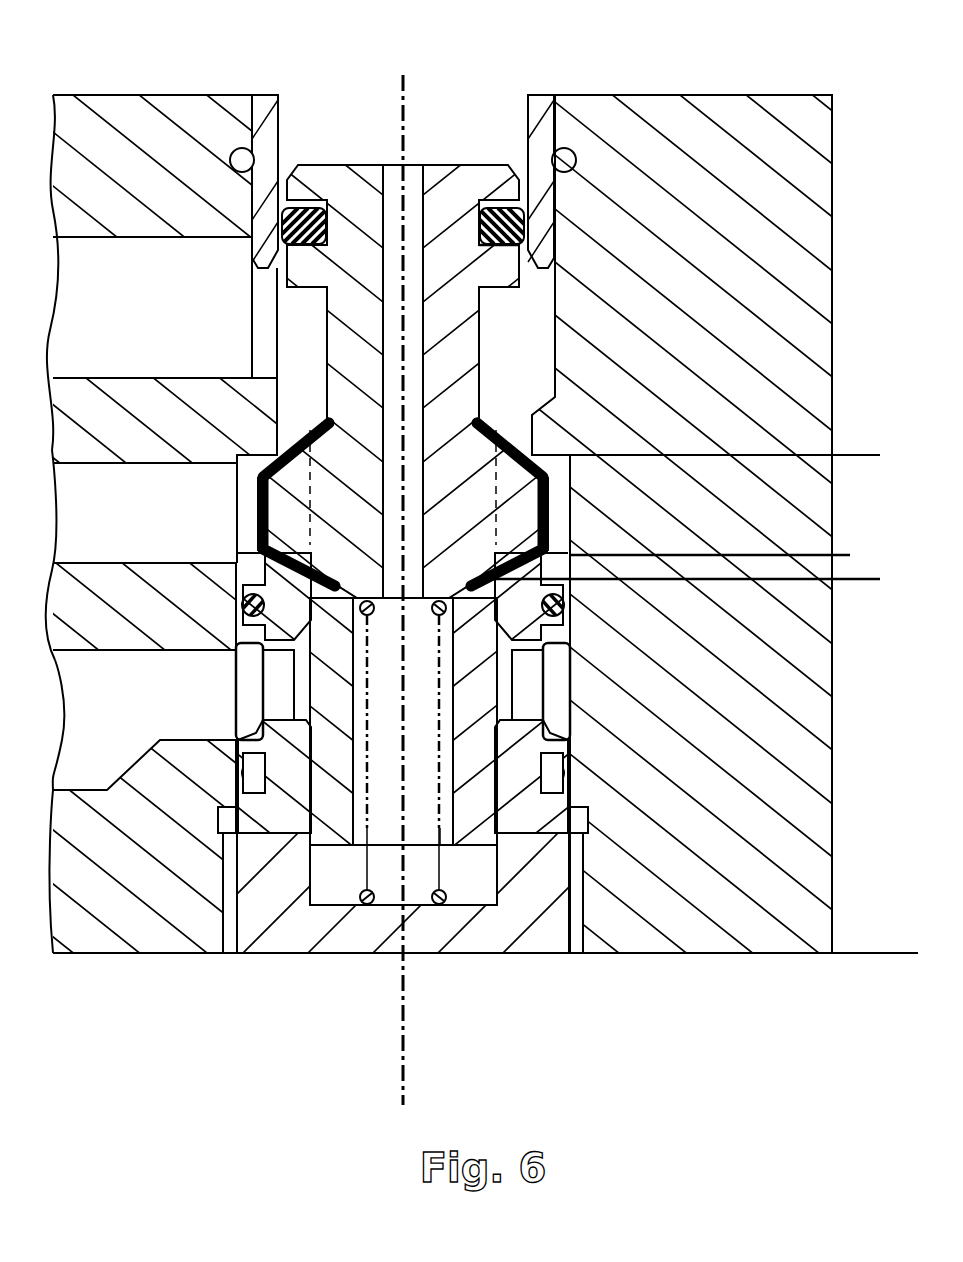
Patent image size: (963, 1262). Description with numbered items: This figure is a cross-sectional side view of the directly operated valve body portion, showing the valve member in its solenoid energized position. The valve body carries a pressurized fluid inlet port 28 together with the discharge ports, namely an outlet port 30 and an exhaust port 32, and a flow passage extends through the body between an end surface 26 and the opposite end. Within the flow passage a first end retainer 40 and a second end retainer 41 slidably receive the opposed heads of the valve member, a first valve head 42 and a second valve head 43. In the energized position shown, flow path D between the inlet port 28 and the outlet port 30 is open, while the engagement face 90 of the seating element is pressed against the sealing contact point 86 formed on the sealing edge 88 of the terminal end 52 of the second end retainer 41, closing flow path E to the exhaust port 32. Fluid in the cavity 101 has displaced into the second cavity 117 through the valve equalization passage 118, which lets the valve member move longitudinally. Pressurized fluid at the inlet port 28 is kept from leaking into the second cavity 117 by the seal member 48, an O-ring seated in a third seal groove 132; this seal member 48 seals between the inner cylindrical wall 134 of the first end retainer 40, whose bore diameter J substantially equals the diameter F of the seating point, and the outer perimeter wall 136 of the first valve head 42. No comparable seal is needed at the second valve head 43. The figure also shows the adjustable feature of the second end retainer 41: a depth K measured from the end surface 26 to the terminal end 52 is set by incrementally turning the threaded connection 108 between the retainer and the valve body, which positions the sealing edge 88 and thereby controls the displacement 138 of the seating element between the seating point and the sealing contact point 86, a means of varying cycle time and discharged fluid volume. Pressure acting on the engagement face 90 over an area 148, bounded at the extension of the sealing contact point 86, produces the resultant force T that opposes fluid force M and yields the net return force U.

The end surface 26 is at (136, 960).
The inlet port 28 is at (100, 292).
The outlet port 30 is at (100, 504).
The exhaust port 32 is at (100, 697).
The first end retainer 40 is at (263, 94).
The second end retainer 41 is at (452, 930).
The first valve head 42 is at (307, 275).
The second valve head 43 is at (330, 817).
The seal member 48 is at (528, 218).
The terminal end 52 is at (255, 577).
The sealing contact point 86 is at (562, 600).
The sealing edge 88 is at (300, 575).
The engagement face 90 is at (322, 565).
The cavity 101 is at (420, 800).
The threaded connection 108 is at (577, 915).
The second cavity 117 is at (510, 134).
The valve equalization passage 118 is at (413, 412).
The third seal groove 132 is at (515, 243).
The inner cylindrical wall 134 is at (537, 125).
The outer perimeter wall 136 is at (274, 277).
The displacement 138 is at (865, 457).
The area 148 is at (314, 418).